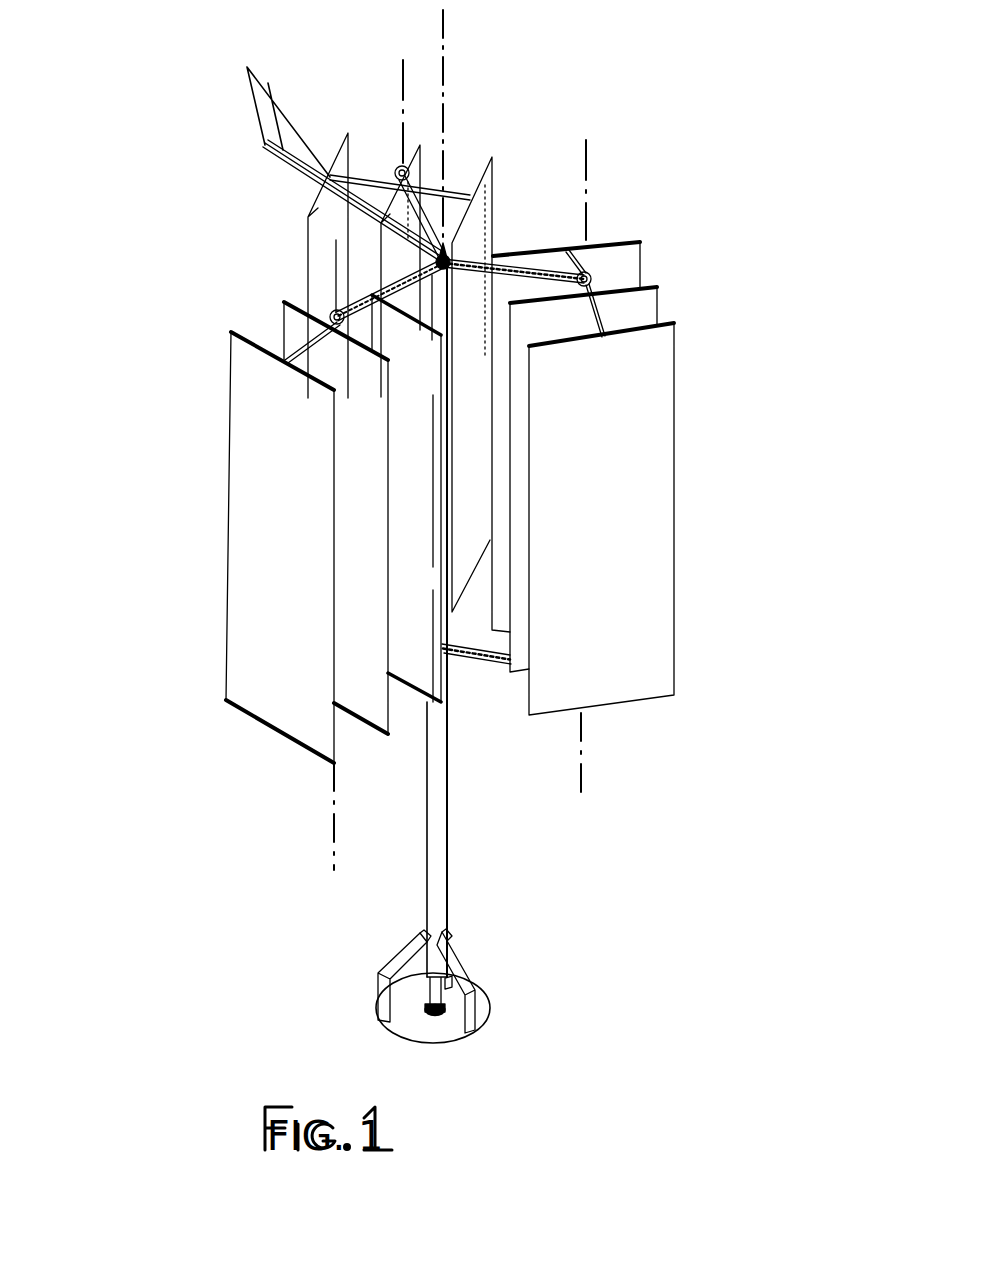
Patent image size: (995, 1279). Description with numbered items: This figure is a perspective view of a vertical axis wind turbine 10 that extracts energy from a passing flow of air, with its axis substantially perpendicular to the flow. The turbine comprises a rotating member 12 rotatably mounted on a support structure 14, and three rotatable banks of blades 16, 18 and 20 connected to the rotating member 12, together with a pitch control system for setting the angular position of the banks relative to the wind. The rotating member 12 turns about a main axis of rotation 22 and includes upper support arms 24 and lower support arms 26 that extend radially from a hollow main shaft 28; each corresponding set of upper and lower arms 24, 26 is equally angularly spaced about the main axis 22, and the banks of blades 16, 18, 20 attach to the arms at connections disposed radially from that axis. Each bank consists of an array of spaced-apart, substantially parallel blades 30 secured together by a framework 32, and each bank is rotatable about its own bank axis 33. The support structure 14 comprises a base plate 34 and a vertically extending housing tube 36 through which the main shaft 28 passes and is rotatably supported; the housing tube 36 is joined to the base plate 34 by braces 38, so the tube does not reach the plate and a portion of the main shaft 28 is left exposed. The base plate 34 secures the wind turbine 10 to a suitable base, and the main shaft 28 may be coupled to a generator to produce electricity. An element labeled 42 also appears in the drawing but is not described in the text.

The vertical axis wind turbine 10 is at (618, 68).
The rotating member 12 is at (492, 243).
The support structure 14 is at (502, 957).
The bank of blades 16 is at (676, 233).
The bank of blades 18 is at (393, 110).
The bank of blades 20 is at (205, 386).
The main axis of rotation 22 is at (447, 38).
The upper support arms 24 is at (450, 188).
The lower support arms 26 is at (399, 680).
The main shaft 28 is at (432, 296).
The blades 30 is at (344, 234).
The framework 32 is at (490, 172).
The bank axis 33 is at (398, 80).
The base plate 34 is at (490, 1008).
The housing tube 36 is at (440, 824).
The braces 38 is at (470, 988).
The tail fin 42 is at (278, 128).